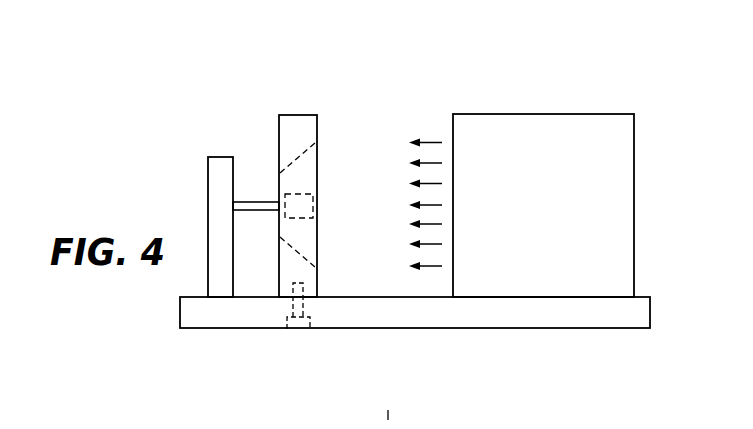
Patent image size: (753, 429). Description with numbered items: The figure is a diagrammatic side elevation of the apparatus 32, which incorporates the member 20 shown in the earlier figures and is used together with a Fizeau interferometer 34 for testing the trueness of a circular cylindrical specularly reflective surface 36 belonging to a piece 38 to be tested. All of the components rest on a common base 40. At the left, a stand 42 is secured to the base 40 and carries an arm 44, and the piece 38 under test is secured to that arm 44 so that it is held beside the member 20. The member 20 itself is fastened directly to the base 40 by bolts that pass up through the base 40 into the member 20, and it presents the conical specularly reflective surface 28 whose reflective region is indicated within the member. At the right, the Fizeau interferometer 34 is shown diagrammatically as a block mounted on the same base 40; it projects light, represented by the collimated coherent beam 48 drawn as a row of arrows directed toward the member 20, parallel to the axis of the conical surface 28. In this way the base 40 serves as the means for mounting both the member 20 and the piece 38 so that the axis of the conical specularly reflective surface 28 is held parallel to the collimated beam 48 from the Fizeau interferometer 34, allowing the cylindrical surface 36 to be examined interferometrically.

The member 20 is at (293, 106).
The conical surface 28 is at (318, 167).
The apparatus 32 is at (181, 120).
The Fizeau interferometer 34 is at (527, 120).
The circular cylindrical specularly reflective surface 36 is at (318, 185).
The piece to be tested 38 is at (318, 215).
The base 40 is at (563, 320).
The stand 42 is at (227, 156).
The arm 44 is at (254, 204).
The collimated coherent beam 48 is at (423, 128).